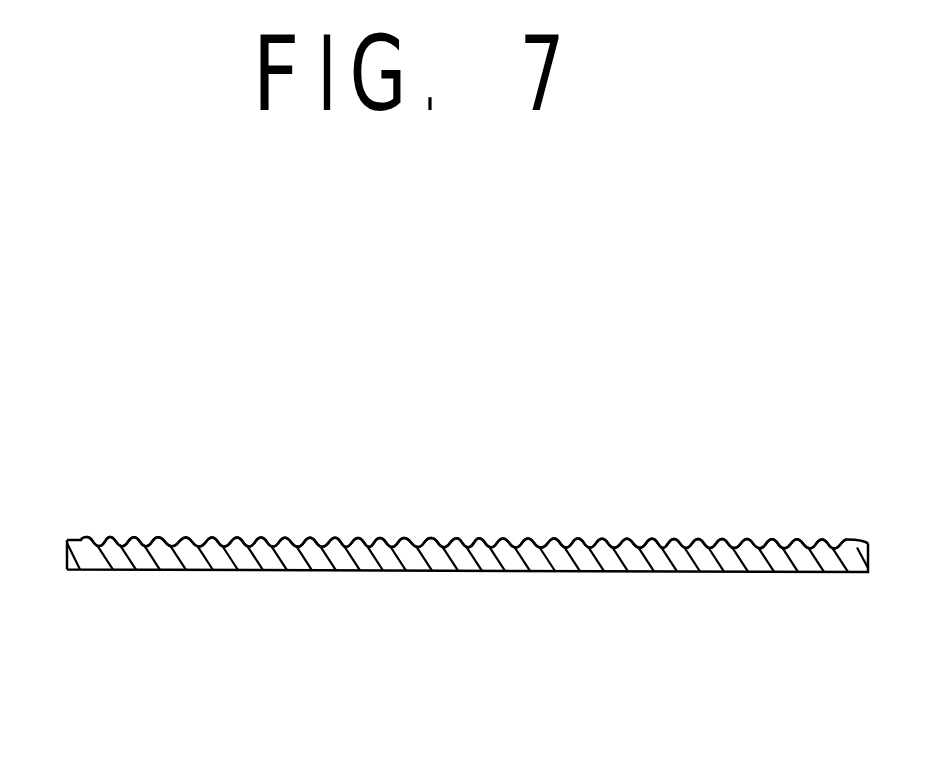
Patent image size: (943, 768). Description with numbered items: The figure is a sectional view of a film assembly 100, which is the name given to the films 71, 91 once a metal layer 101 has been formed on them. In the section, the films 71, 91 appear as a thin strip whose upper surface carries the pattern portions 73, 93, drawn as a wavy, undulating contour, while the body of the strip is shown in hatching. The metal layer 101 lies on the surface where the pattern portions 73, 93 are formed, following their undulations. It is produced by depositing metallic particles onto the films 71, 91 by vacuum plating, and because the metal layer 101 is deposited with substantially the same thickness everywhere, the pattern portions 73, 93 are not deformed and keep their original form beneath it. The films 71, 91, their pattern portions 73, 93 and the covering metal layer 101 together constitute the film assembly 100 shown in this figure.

The film assembly 100 is at (95, 412).
The metal layer 101 is at (307, 537).
The film 71 is at (95, 552).
The film 91 is at (458, 629).
The pattern portion 73 is at (282, 538).
The pattern portion 93 is at (467, 627).